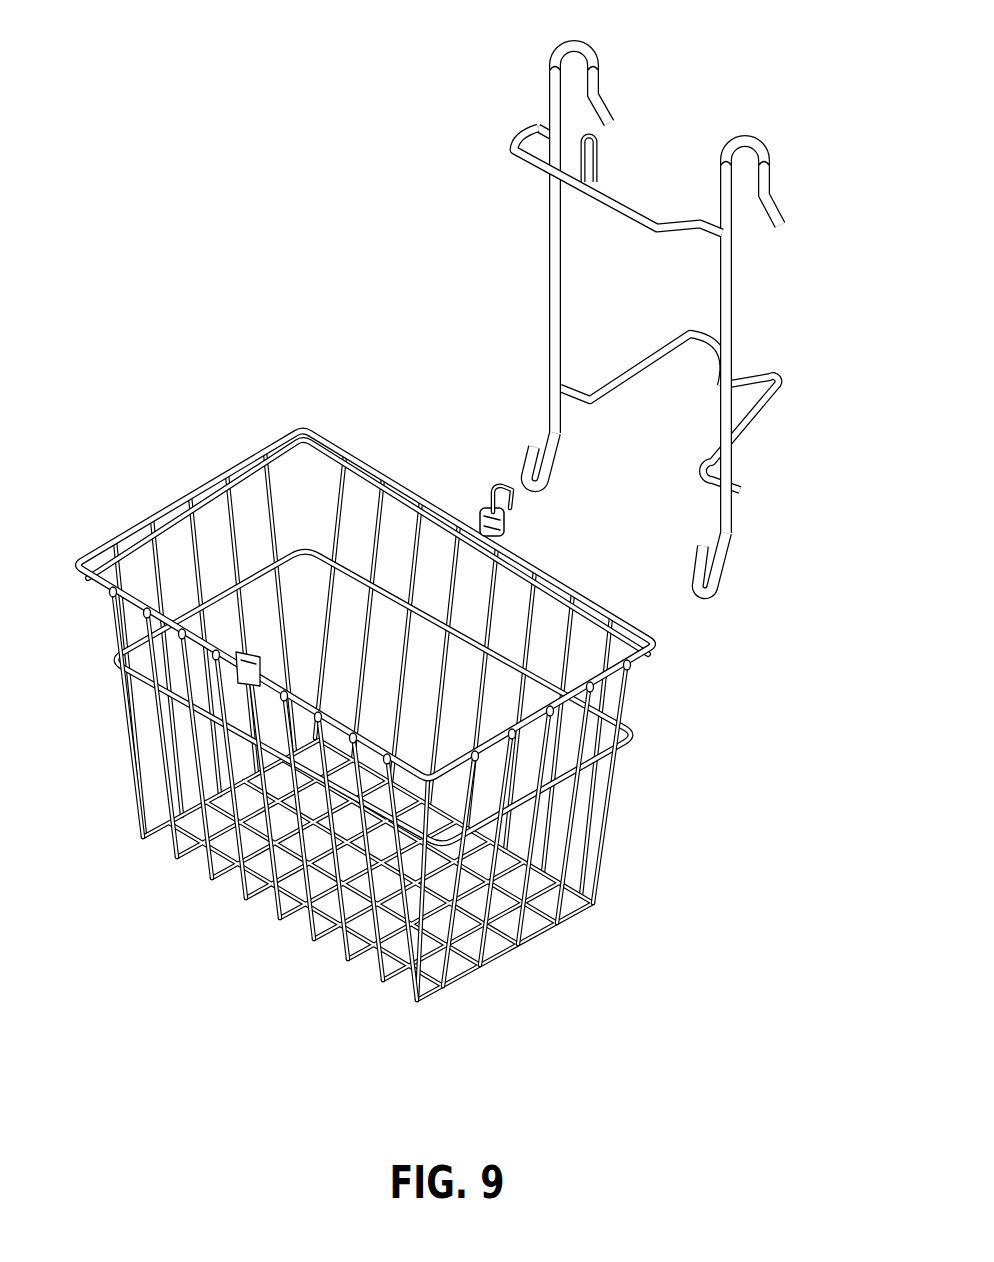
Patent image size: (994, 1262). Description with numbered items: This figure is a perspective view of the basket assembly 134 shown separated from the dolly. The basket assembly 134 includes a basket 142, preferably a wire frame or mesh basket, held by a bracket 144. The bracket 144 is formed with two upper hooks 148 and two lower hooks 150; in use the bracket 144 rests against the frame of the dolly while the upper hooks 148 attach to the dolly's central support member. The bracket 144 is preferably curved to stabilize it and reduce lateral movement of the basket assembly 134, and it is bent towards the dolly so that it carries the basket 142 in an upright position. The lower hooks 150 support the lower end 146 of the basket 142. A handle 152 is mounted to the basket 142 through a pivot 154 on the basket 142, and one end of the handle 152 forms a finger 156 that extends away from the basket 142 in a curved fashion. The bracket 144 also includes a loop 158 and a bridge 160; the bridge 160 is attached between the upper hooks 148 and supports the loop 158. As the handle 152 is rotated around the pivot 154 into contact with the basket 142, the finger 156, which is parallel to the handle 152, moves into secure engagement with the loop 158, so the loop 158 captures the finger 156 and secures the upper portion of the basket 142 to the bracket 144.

The basket assembly 134 is at (356, 302).
The basket 142 is at (658, 647).
The bracket 144 is at (693, 304).
The lower end 146 is at (612, 838).
The upper hooks 148 is at (597, 80).
The lower hooks 150 is at (541, 473).
The handle 152 is at (210, 476).
The pivot 154 is at (505, 528).
The finger 156 is at (490, 488).
The loop 158 is at (600, 170).
The bridge 160 is at (683, 304).